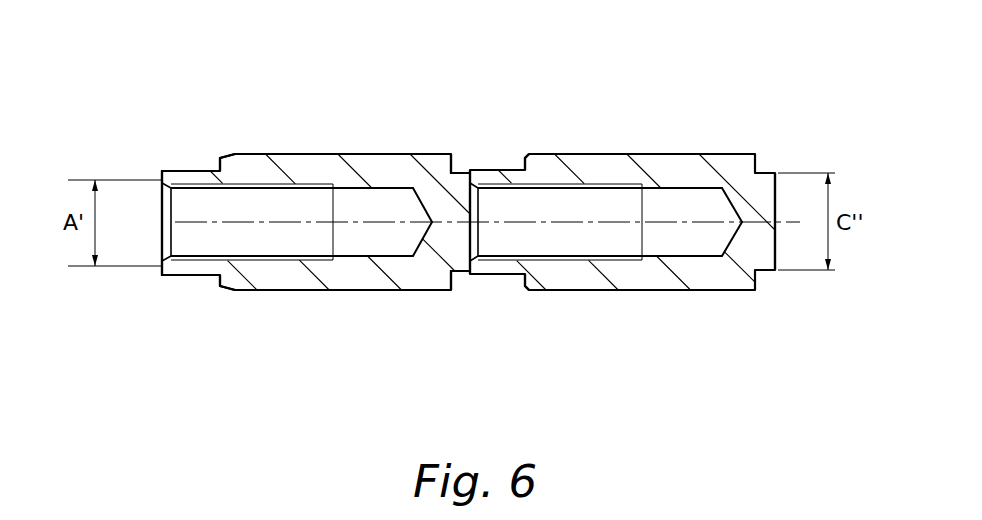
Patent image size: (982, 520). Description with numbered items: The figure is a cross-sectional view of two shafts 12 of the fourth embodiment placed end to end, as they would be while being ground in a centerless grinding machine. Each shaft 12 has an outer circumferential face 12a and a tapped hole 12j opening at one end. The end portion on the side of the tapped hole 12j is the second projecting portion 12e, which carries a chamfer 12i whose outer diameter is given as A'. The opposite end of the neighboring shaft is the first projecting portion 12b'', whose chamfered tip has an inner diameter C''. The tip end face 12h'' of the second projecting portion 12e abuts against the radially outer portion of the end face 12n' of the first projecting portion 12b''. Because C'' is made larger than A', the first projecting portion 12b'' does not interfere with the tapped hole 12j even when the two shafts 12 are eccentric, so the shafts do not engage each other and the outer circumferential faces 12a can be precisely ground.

The shaft 12 is at (355, 110).
The outer circumferential face 12a is at (352, 154).
The first projecting portion 12b'' is at (682, 164).
The second projecting portion 12e is at (203, 166).
The tip end face 12h'' is at (323, 158).
The chamfer 12i is at (163, 262).
The tapped hole 12j is at (266, 191).
The end face 12n' is at (499, 268).